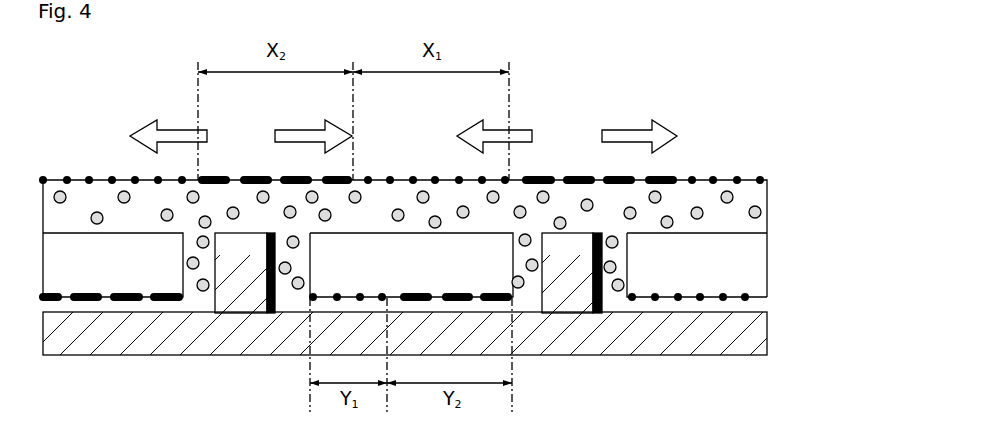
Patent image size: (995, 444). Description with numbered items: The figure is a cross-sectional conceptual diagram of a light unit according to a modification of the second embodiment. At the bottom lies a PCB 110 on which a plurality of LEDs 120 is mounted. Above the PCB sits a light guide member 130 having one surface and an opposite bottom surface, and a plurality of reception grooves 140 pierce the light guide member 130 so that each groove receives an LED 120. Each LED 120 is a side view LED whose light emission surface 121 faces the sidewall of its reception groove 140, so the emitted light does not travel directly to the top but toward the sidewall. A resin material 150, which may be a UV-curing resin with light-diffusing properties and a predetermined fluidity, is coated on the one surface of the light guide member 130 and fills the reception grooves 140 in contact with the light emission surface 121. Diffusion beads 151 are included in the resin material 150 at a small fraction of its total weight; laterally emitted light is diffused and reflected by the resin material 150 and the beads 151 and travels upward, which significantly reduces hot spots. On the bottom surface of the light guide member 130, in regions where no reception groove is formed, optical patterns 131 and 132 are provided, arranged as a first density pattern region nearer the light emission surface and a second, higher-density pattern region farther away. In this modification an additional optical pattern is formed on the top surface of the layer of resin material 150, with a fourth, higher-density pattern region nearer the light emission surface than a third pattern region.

The PCB 110 is at (757, 335).
The LED 120 is at (563, 305).
The light emission surface 121 is at (598, 312).
The light guide member 130 is at (753, 253).
The optical pattern 131 is at (458, 295).
The optical pattern 132 is at (362, 295).
The reception groove 140 is at (453, 190).
The resin material 150 is at (451, 188).
The diffusion beads 151 is at (753, 211).